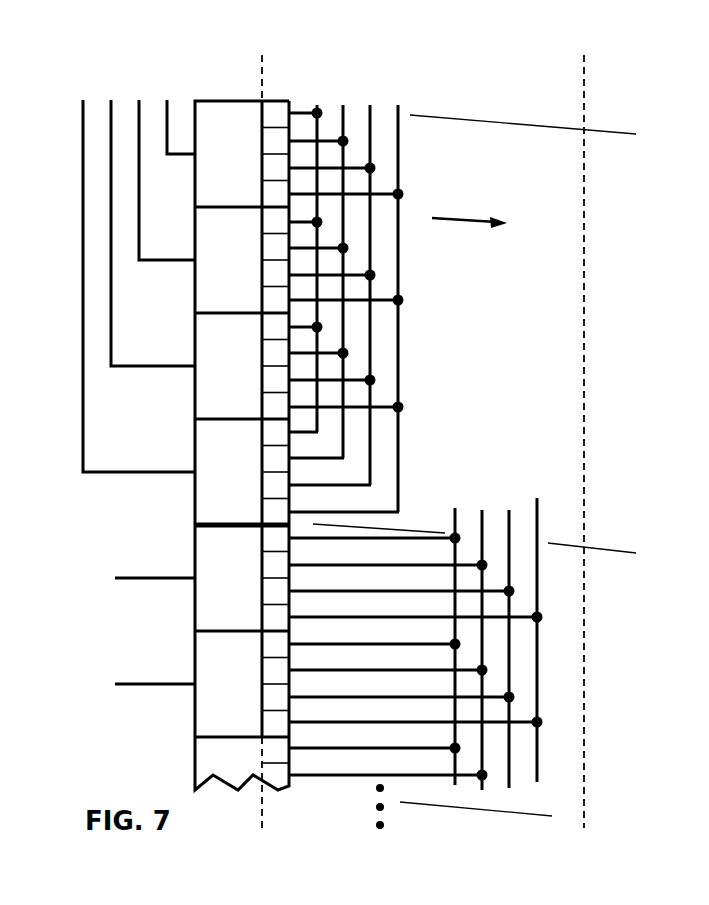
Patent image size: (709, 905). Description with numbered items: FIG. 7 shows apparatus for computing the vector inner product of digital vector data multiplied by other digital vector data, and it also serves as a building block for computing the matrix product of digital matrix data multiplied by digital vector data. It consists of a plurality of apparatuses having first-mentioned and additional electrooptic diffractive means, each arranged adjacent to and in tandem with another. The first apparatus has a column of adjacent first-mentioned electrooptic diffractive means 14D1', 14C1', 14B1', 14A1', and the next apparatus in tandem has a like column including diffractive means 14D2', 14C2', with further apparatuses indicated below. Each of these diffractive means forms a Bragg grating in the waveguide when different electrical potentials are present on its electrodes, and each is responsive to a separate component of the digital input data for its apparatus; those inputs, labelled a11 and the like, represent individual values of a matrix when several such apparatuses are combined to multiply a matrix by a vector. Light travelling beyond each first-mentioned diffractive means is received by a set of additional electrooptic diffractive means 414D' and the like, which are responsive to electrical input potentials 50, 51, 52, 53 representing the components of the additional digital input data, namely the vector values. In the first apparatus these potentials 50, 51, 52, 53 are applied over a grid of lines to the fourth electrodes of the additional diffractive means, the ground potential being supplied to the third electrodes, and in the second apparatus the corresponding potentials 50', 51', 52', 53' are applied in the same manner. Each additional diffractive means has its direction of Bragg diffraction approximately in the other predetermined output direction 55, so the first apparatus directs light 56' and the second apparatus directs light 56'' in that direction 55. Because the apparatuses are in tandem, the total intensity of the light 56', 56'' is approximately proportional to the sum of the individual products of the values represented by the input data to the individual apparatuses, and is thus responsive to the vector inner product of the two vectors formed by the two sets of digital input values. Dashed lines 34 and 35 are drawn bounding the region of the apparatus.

The first-mentioned electrooptic diffractive means 14D1' is at (229, 154).
The first-mentioned electrooptic diffractive means 14C1' is at (229, 260).
The first-mentioned electrooptic diffractive means 14B1' is at (229, 366).
The first-mentioned electrooptic diffractive means 14A1' is at (229, 472).
The first-mentioned electrooptic diffractive means 14D2' is at (229, 578).
The first-mentioned electrooptic diffractive means 14C2' is at (229, 684).
The additional electrooptic diffractive means 414D' is at (374, 407).
The digital input a11 is at (176, 97).
The boundary line 34 is at (259, 63).
The boundary line 35 is at (582, 78).
The electrical input potential 50 is at (392, 297).
The electrical input potential 51 is at (363, 284).
The electrical input potential 52 is at (335, 270).
The electrical input potential 53 is at (307, 257).
The electrical input potential 50' is at (548, 631).
The electrical input potential 51' is at (514, 634).
The electrical input potential 52' is at (480, 635).
The electrical input potential 53' is at (443, 633).
The other predetermined output direction 55 is at (470, 224).
The light 56' is at (383, 310).
The light 56'' is at (433, 656).